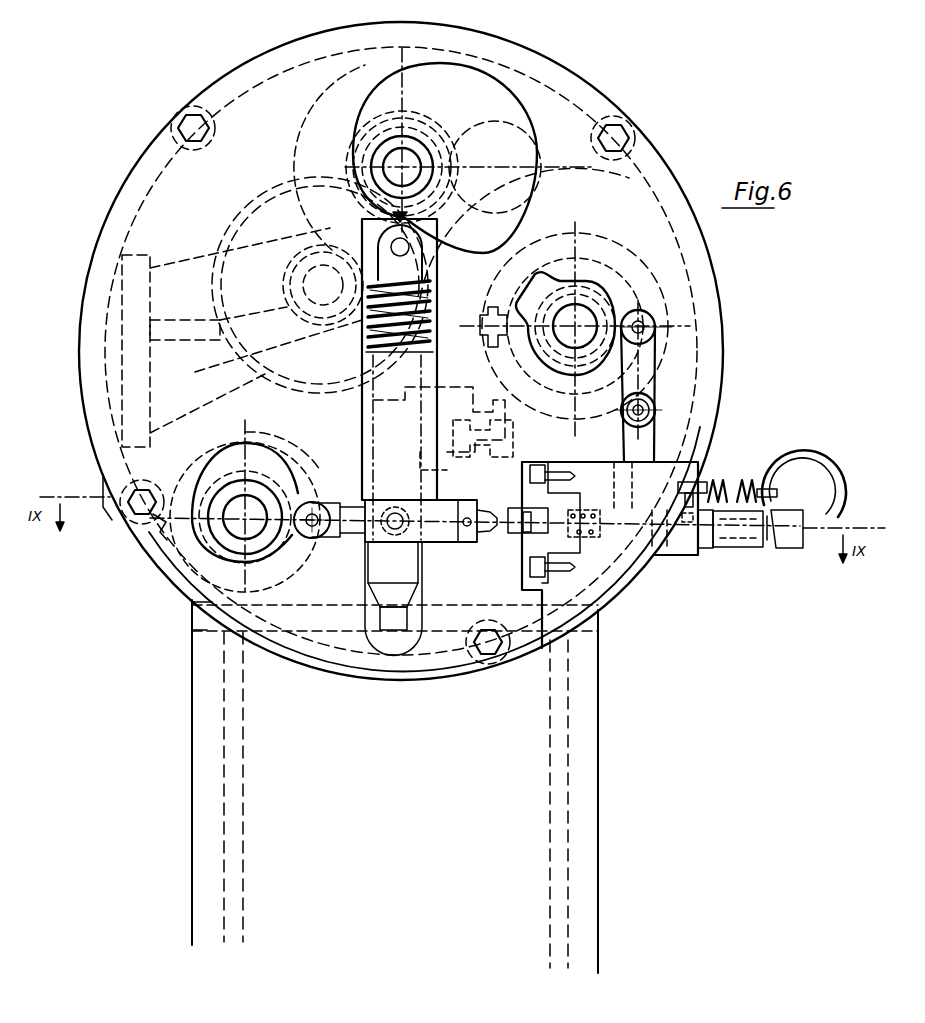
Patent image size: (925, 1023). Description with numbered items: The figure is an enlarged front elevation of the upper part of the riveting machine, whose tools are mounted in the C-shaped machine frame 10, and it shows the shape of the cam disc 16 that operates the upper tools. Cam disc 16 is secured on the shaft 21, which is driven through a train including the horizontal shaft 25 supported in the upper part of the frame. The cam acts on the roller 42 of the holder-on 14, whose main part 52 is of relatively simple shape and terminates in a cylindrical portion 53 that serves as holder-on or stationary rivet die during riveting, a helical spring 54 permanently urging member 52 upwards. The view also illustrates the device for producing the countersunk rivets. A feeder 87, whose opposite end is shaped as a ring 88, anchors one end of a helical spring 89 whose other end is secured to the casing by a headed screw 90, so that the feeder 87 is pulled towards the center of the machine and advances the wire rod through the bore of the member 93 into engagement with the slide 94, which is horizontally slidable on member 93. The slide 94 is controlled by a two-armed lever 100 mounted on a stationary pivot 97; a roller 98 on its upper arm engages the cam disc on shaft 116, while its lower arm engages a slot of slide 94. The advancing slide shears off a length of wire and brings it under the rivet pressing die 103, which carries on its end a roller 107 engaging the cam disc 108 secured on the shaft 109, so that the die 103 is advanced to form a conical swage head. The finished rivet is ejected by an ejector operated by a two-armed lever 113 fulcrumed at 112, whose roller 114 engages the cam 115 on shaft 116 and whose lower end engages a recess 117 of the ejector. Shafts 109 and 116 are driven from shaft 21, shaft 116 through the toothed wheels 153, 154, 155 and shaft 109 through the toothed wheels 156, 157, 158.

The machine frame 10 is at (593, 728).
The holder-on 14 is at (413, 373).
The cam disc 16 is at (518, 97).
The shaft 21 is at (385, 153).
The horizontal shaft 25 is at (313, 272).
The roller 42 is at (424, 250).
The main part 52 is at (412, 563).
The cylindrical portion 53 is at (398, 619).
The helical spring 54 is at (428, 323).
The feeder 87 is at (783, 549).
The ring 88 is at (793, 453).
The helical spring 89 is at (742, 479).
The headed screw 90 is at (704, 482).
The member 93 is at (567, 503).
The slide 94 is at (535, 536).
The stationary pivot 97 is at (507, 430).
The roller 98 is at (492, 307).
The two-armed lever 100 is at (487, 463).
The rivet pressing die 103 is at (478, 540).
The roller 107 is at (313, 538).
The cam disc 108 is at (223, 440).
The shaft 109 is at (233, 527).
The fulcrum 112 is at (651, 406).
The two-armed lever 113 is at (645, 440).
The roller 114 is at (657, 325).
The cam 115 is at (541, 288).
The shaft 116 is at (583, 318).
The recess 117 is at (653, 535).
The toothed wheel 153 is at (410, 122).
The toothed wheel 154 is at (572, 170).
The toothed wheel 155 is at (567, 230).
The toothed wheel 156 is at (317, 97).
The toothed wheel 157 is at (217, 311).
The toothed wheel 158 is at (162, 528).